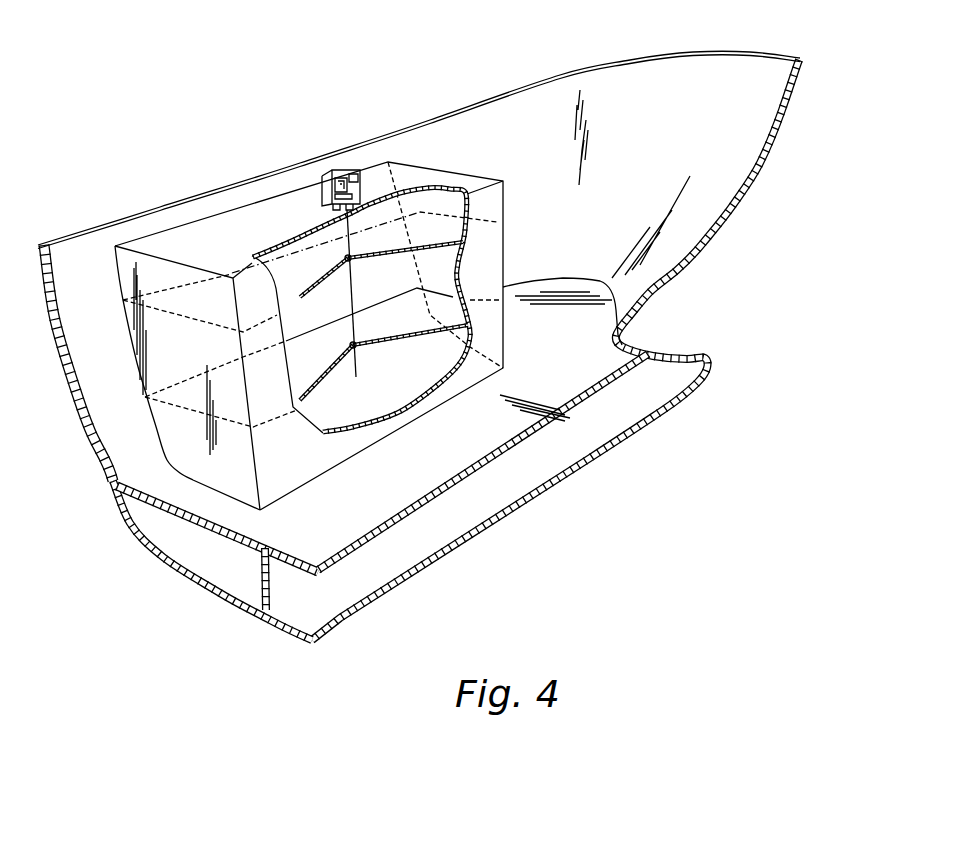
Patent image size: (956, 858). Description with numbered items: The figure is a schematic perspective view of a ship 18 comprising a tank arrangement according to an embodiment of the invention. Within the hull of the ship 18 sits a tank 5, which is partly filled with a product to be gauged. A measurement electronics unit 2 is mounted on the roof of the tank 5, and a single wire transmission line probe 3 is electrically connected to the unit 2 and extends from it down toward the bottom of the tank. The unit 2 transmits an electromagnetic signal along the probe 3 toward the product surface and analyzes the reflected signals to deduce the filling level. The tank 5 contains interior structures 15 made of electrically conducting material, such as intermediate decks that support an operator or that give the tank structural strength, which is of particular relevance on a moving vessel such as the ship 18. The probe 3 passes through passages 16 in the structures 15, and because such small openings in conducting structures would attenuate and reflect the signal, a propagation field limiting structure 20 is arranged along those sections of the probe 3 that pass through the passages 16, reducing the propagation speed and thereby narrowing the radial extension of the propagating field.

The measurement electronics unit 2 is at (332, 171).
The single wire transmission line probe 3 is at (357, 363).
The tank 5 is at (458, 182).
The interior structures 15 is at (427, 233).
The passages 16 is at (346, 263).
The ship 18 is at (694, 243).
The propagation field limiting structure 20 is at (356, 342).